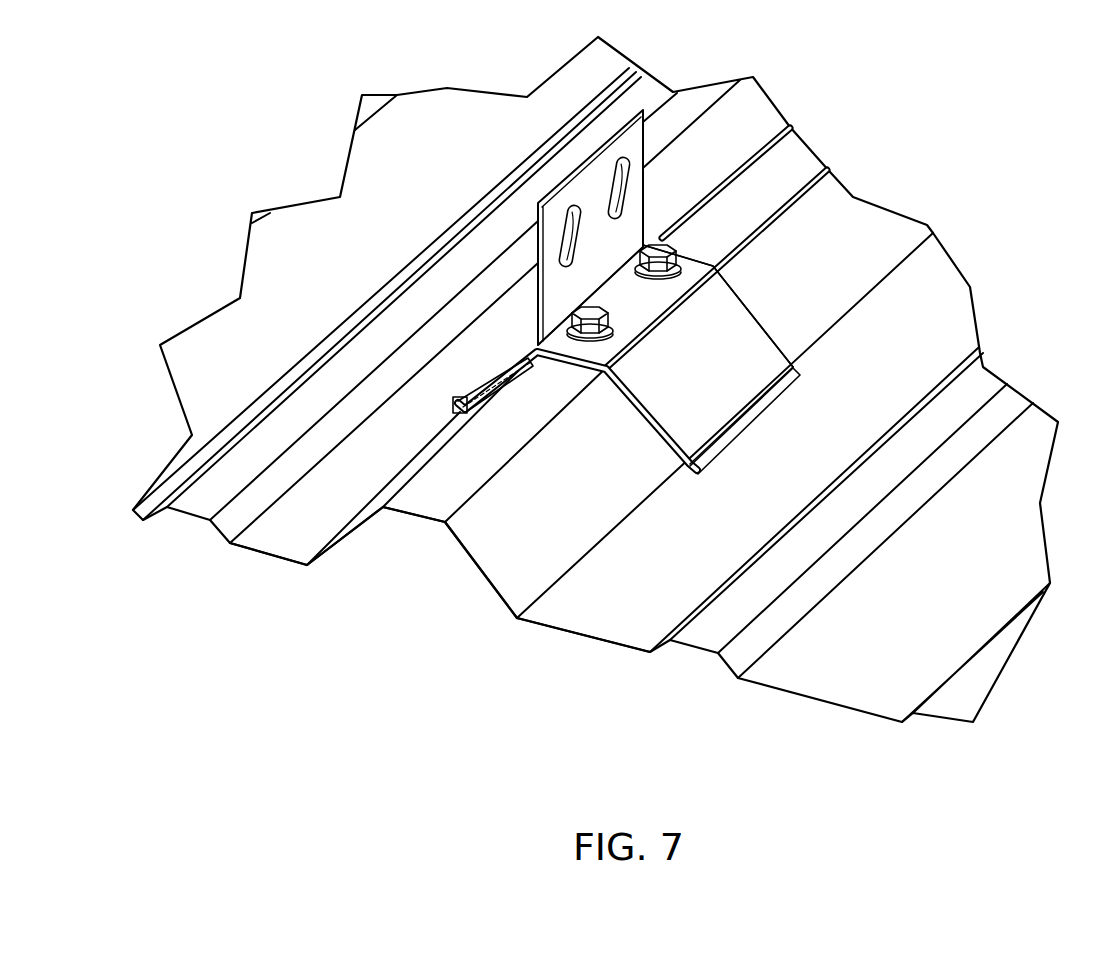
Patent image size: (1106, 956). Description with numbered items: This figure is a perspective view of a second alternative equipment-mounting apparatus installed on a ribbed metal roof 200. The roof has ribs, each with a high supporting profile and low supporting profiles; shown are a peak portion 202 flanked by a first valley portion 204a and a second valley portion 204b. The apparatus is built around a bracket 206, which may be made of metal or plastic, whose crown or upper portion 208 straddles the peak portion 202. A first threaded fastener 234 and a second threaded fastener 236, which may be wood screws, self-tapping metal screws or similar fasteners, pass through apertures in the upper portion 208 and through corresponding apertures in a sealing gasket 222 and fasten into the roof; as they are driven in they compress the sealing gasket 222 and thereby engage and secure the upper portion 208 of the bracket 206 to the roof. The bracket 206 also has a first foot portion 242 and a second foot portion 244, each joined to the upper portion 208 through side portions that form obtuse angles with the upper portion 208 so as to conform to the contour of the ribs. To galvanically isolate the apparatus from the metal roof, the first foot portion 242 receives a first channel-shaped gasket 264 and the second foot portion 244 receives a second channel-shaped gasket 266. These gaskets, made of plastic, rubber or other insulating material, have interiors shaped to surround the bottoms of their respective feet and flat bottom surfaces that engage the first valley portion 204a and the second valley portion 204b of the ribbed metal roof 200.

The ribbed metal roof 200 is at (638, 561).
The peak portion 202 is at (407, 517).
The first valley portion 204a is at (278, 558).
The second valley portion 204b is at (572, 637).
The bracket 206 is at (620, 184).
The upper portion 208 is at (716, 267).
The sealing gasket 222 is at (610, 360).
The first threaded fastener 234 is at (590, 306).
The second threaded fastener 236 is at (660, 243).
The first foot portion 242 is at (462, 393).
The second foot portion 244 is at (690, 458).
The first channel-shaped gasket 264 is at (455, 409).
The second channel-shaped gasket 266 is at (740, 436).